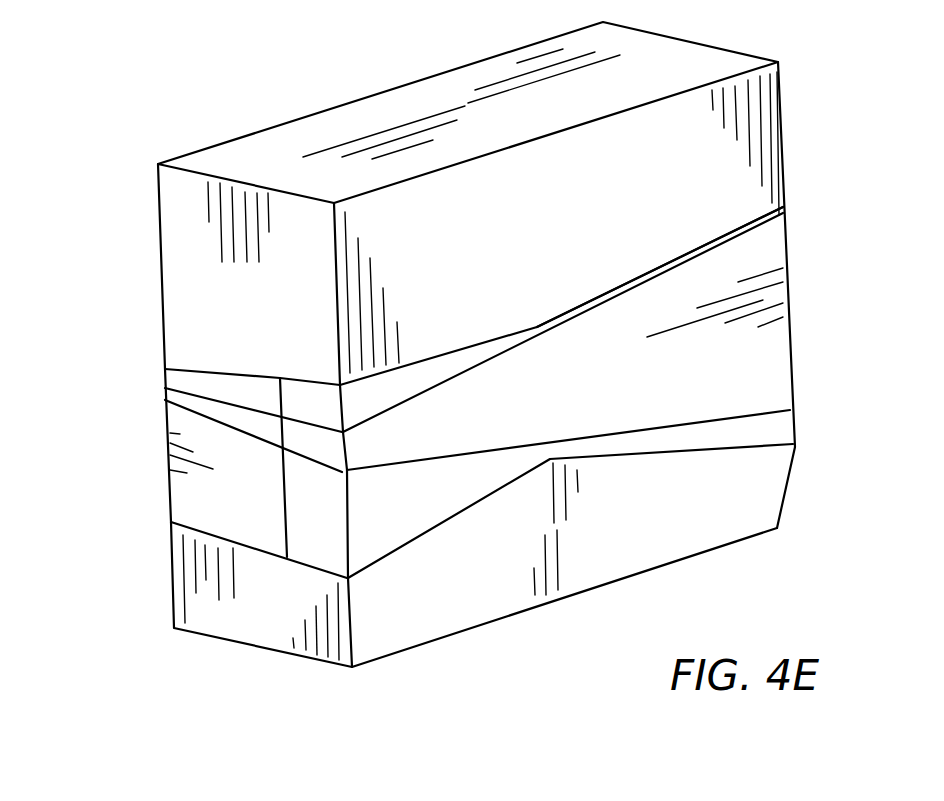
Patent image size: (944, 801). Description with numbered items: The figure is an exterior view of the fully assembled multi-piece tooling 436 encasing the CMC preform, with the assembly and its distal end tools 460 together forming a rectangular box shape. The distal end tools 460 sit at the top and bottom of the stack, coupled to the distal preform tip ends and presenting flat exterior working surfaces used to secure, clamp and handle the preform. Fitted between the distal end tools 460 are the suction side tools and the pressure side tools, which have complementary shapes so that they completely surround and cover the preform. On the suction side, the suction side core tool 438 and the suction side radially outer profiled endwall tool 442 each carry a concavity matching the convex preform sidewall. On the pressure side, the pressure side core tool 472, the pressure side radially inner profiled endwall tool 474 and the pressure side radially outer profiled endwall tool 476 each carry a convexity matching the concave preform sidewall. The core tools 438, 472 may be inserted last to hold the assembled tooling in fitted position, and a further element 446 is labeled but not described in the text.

The distal end tool 460 is at (247, 132).
The multi-piece tooling 436 is at (133, 450).
The suction side core tool 438 is at (804, 248).
The suction side radially outer profiled endwall tool 442 is at (178, 374).
The lower surface of core 446 is at (185, 500).
The pressure side core tool 472 is at (143, 390).
The pressure side radially inner profiled endwall tool 474 is at (780, 427).
The pressure side radially outer profiled endwall tool 476 is at (764, 212).